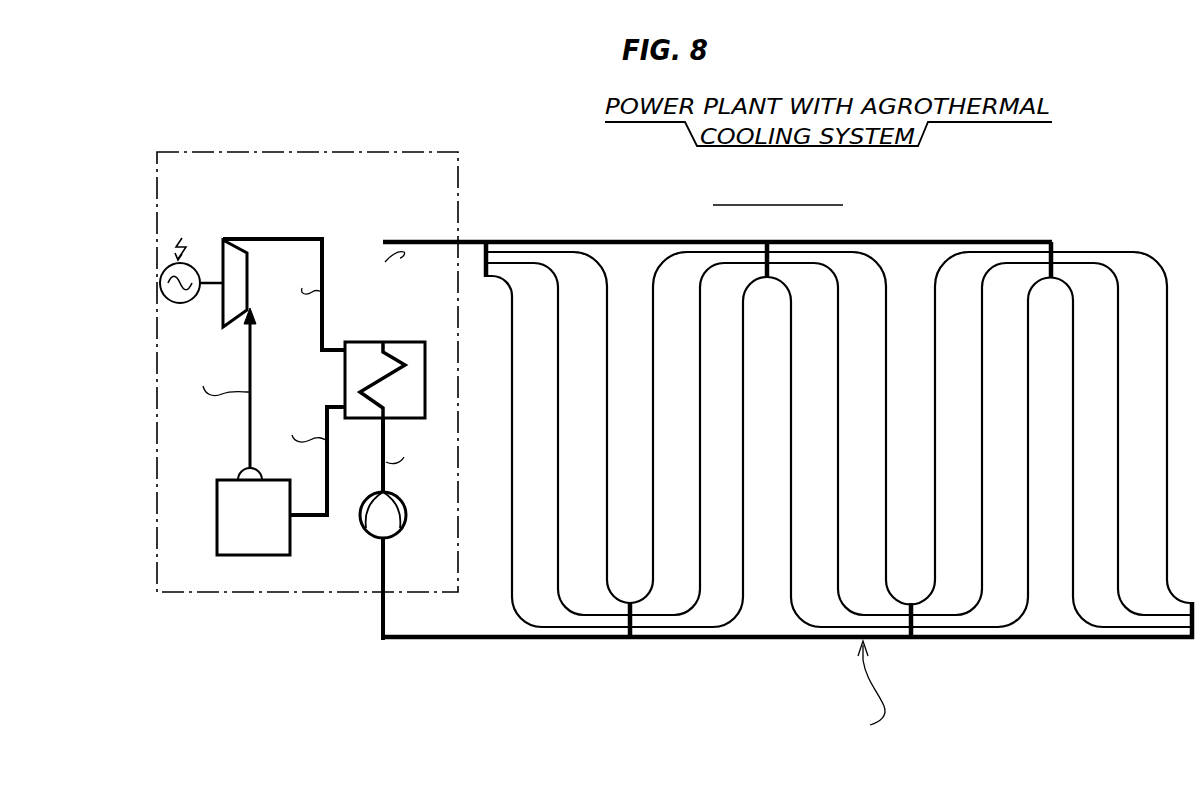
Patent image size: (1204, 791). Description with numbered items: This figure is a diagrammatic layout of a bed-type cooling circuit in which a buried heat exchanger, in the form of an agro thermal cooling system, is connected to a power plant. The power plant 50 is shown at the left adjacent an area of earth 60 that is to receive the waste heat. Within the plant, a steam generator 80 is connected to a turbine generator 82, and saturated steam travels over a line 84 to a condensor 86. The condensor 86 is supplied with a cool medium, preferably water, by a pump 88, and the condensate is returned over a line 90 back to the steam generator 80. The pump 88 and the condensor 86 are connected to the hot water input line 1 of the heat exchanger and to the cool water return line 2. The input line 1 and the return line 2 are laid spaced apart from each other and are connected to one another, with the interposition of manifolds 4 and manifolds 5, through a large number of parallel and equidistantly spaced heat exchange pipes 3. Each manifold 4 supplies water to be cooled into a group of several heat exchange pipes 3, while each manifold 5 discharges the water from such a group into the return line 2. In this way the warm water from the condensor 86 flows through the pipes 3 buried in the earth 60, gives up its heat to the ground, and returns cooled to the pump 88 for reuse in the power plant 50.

The hot water forward or input line 1 is at (672, 239).
The cool water return line 2 is at (476, 640).
The heat exchange pipes 3 is at (513, 428).
The manifold 4 is at (492, 252).
The manifold 5 is at (633, 637).
The power plant 50 is at (460, 206).
The area of earth 60 is at (624, 230).
The steam generator 80 is at (222, 543).
The turbine generator 82 is at (226, 240).
The line 84 is at (320, 238).
The condensor 86 is at (418, 345).
The pump 88 is at (402, 526).
The line 90 is at (330, 502).